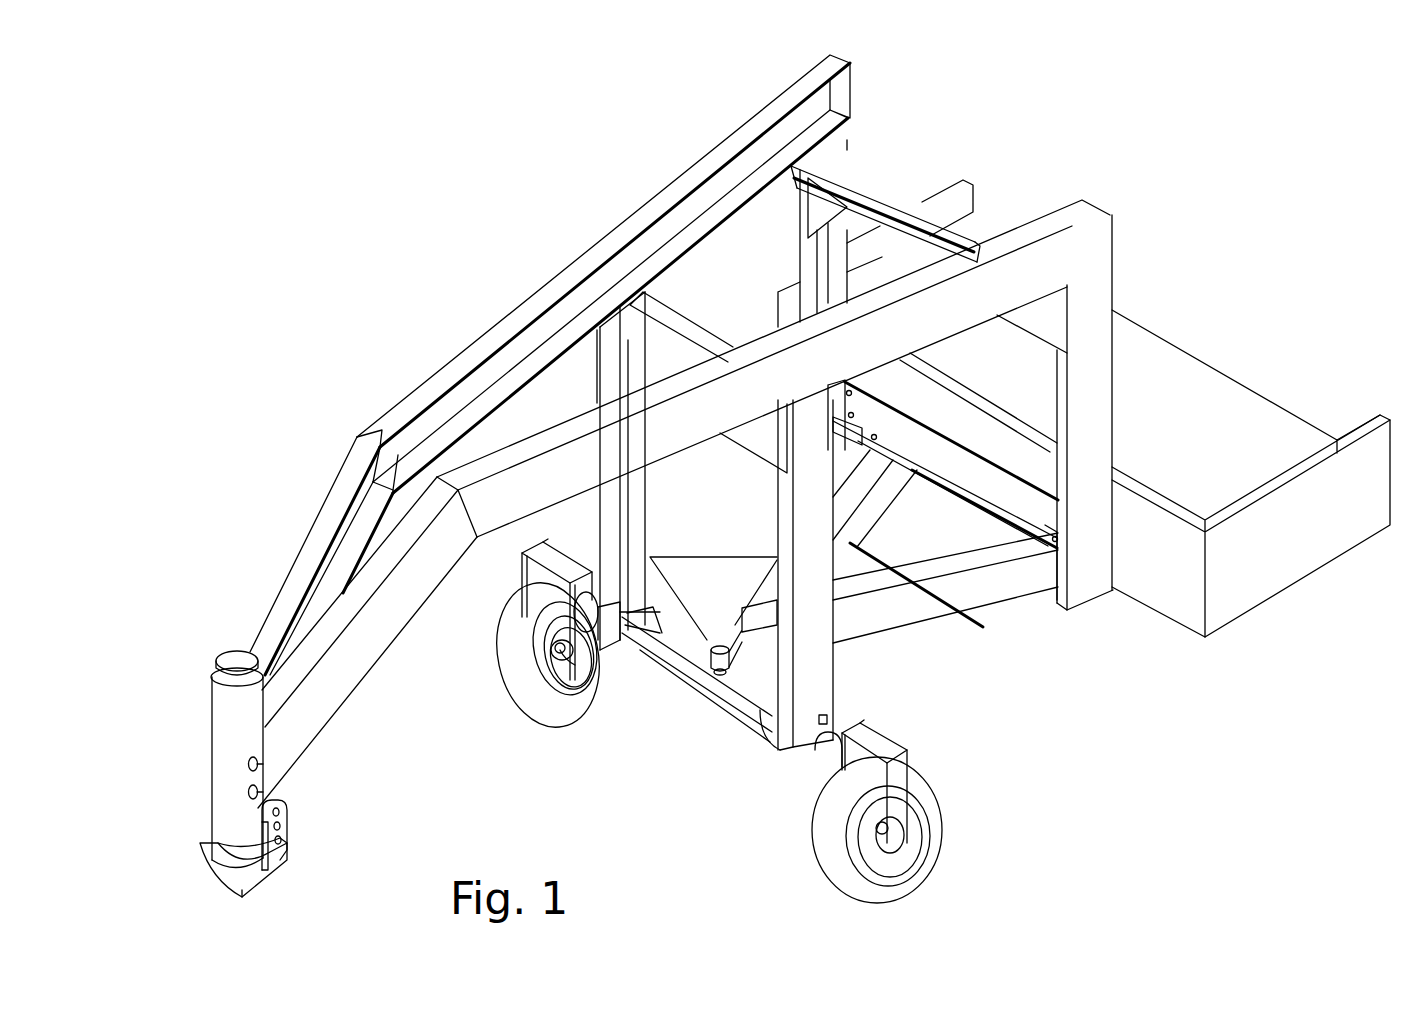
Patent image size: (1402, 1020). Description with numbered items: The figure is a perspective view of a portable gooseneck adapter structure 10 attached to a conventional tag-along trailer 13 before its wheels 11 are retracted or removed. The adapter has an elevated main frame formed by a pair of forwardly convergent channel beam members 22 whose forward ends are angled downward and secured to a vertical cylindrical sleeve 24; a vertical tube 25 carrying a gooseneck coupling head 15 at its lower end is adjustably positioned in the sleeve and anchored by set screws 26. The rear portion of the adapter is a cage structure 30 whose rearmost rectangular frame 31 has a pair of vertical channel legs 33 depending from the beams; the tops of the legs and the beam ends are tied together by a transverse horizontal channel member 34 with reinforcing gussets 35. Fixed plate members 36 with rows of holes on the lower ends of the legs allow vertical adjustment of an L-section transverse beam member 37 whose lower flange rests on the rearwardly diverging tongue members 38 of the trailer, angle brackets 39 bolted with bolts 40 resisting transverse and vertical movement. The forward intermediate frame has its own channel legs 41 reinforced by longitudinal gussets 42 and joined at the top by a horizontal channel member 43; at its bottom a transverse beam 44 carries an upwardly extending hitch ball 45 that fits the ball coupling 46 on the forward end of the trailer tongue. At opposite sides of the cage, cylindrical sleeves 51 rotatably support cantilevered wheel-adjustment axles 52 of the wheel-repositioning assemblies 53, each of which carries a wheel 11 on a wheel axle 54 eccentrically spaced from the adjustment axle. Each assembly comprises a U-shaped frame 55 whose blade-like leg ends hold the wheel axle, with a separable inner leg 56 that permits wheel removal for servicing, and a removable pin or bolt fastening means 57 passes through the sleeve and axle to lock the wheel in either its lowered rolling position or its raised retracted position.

The portable gooseneck adapter structure 10 is at (402, 382).
The wheels 11 is at (503, 658).
The tag-along trailer 13 is at (1248, 618).
The gooseneck coupling head 15 is at (202, 868).
The beam members 22 is at (739, 138).
The vertical cylindrical sleeve 24 is at (222, 757).
The vertical tube 25 is at (220, 658).
The set screws 26 is at (265, 790).
The cage structure 30 is at (983, 650).
The rectangular frame 31 is at (685, 323).
The channel legs 33 is at (803, 265).
The horizontal channel member 34 is at (873, 183).
The reinforcing gussets 35 is at (817, 217).
The plate members 36 is at (850, 400).
The transverse horizontal beam member 37 is at (963, 475).
The tongue members 38 is at (970, 590).
The angle brackets 39 is at (1047, 550).
The bolts 40 is at (868, 437).
The channel legs 41 is at (797, 535).
The reinforcing gussets 42 is at (590, 362).
The horizontal channel member 43 is at (690, 348).
The transverse beam 44 is at (697, 674).
The hitch ball 45 is at (710, 673).
The ball coupling 46 is at (713, 643).
The cylindrical sleeves 51 is at (598, 630).
The wheel-adjustment axles 52 is at (592, 585).
The wheel-repositioning assemblies 53 is at (520, 577).
The wheel axles 54 is at (580, 662).
The U-shaped frame 55 is at (548, 547).
The inner leg 56 is at (577, 657).
The pin or bolt fastening means 57 is at (826, 718).